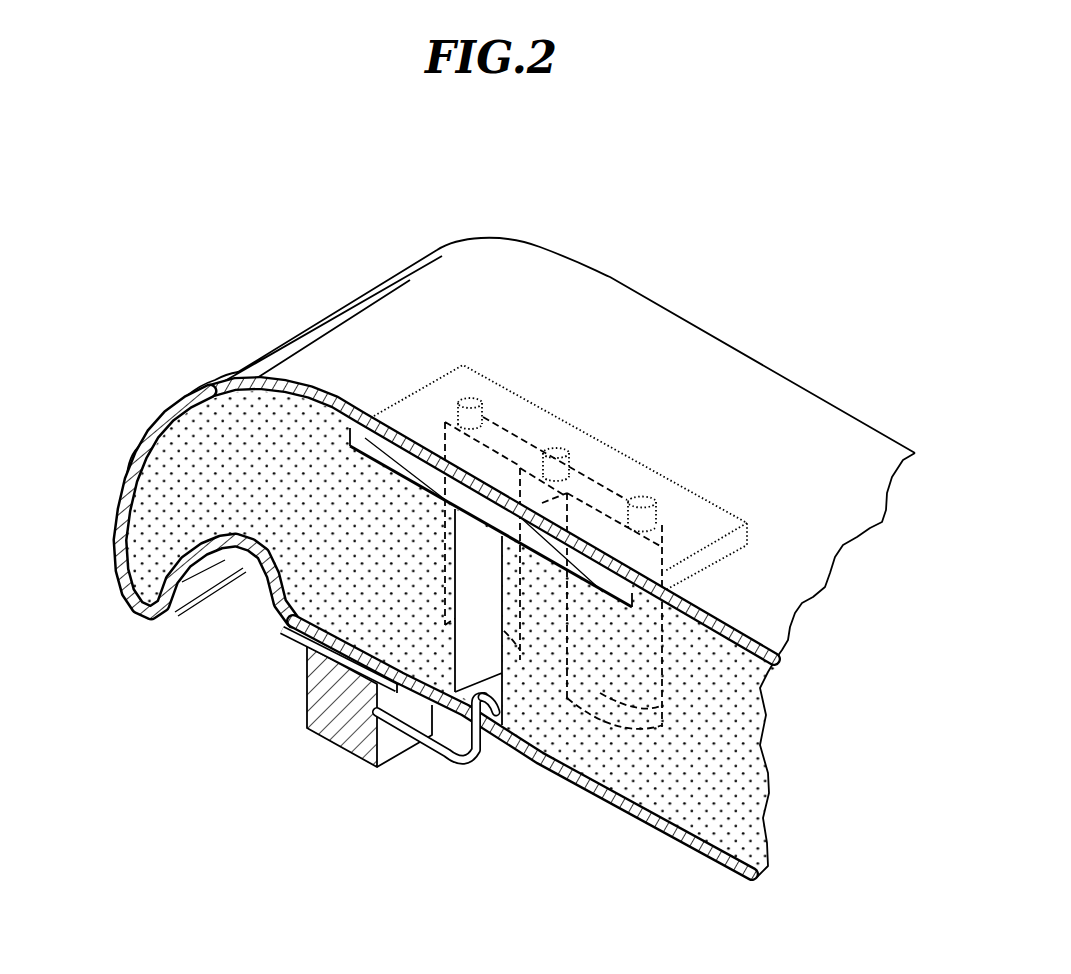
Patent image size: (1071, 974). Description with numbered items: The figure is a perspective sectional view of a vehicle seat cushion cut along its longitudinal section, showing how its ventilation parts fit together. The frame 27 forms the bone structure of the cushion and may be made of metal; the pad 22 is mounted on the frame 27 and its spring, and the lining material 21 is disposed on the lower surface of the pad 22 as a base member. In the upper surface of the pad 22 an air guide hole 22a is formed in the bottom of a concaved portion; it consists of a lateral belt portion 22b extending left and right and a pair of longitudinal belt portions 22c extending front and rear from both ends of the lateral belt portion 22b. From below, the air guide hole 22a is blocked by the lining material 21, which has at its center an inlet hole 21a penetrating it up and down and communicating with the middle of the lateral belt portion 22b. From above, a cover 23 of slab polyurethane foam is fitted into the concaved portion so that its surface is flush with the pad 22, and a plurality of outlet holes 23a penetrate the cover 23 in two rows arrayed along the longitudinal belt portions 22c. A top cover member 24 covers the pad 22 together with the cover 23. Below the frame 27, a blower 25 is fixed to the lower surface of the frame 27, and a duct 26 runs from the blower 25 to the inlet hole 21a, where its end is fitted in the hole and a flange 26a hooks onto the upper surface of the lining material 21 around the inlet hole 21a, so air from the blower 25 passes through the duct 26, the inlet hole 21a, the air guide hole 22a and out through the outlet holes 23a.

The lining material 21 is at (690, 847).
The inlet hole 21a is at (450, 747).
The pad 22 is at (183, 483).
The air guide hole 22a is at (468, 574).
The lateral belt portion 22b is at (510, 488).
The longitudinal belt portion 22c is at (595, 497).
The cover 23 is at (710, 528).
The outlet holes 23a is at (653, 497).
The top cover member 24 is at (247, 387).
The blower 25 is at (330, 730).
The duct 26 is at (477, 767).
The flange 26a is at (532, 753).
The frame 27 is at (180, 542).